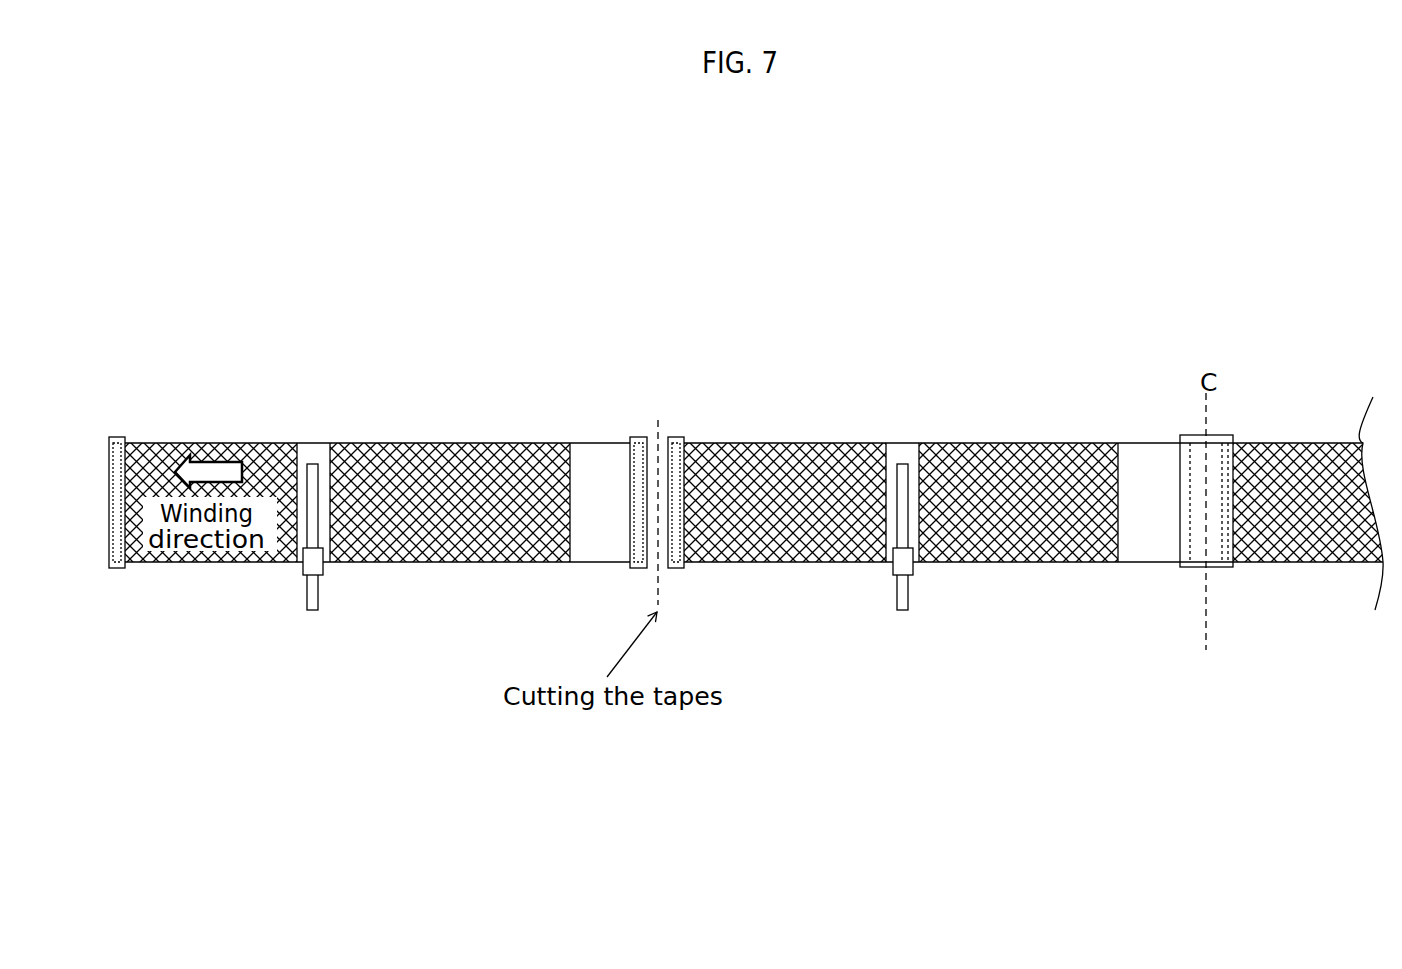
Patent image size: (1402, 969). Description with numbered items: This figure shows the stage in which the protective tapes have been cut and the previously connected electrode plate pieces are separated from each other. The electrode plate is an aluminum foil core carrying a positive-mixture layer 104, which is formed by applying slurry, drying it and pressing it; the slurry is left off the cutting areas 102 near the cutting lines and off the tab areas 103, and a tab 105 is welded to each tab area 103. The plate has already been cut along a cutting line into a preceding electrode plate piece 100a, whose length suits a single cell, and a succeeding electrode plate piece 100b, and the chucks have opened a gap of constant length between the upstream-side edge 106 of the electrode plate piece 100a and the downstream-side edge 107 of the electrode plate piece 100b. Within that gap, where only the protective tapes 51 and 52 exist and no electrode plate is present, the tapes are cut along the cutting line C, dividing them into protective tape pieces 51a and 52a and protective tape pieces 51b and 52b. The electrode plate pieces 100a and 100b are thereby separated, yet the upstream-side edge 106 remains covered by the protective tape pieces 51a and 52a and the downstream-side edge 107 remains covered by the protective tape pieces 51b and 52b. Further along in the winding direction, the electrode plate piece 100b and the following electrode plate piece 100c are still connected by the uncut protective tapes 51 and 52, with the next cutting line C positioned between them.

The preceding electrode plate piece 100a is at (459, 426).
The succeeding electrode plate piece 100b is at (1019, 426).
The following electrode plate piece 100c is at (1313, 416).
The cutting area 102 is at (597, 459).
The tab area 103 is at (313, 460).
The positive-mixture layer 104 is at (201, 550).
The tab 105 is at (328, 582).
The upstream-side edge 106 is at (638, 437).
The downstream-side edge 107 is at (128, 437).
The protective tape 51 is at (1216, 559).
The protective tape 52 is at (1193, 572).
The protective tape piece 51a is at (591, 535).
The protective tape piece 52a is at (635, 570).
The protective tape piece 51b is at (435, 538).
The protective tape piece 52b is at (118, 570).